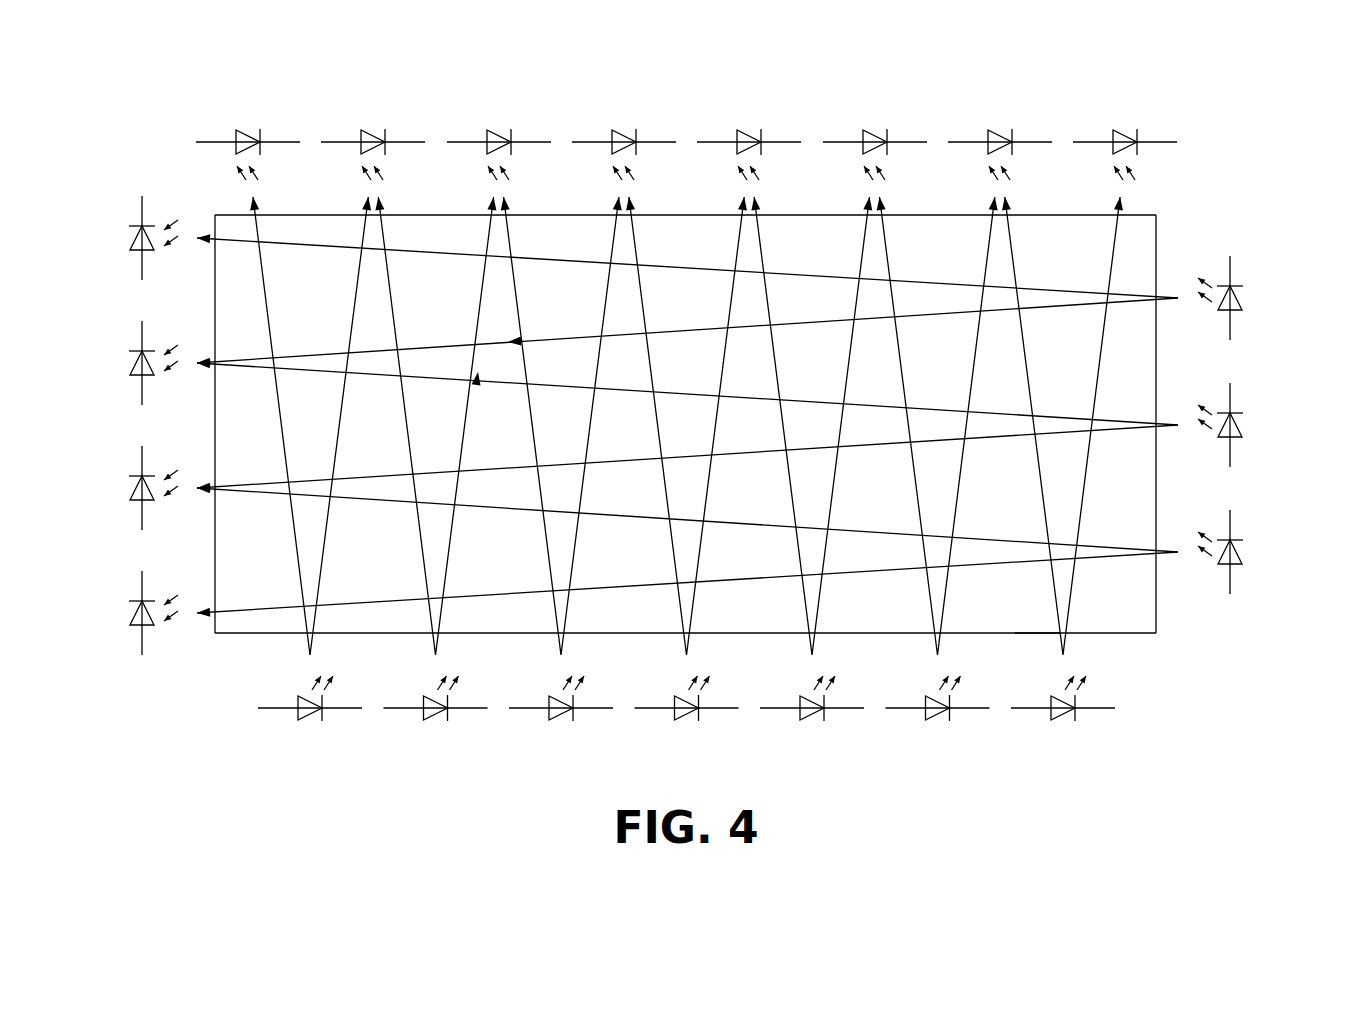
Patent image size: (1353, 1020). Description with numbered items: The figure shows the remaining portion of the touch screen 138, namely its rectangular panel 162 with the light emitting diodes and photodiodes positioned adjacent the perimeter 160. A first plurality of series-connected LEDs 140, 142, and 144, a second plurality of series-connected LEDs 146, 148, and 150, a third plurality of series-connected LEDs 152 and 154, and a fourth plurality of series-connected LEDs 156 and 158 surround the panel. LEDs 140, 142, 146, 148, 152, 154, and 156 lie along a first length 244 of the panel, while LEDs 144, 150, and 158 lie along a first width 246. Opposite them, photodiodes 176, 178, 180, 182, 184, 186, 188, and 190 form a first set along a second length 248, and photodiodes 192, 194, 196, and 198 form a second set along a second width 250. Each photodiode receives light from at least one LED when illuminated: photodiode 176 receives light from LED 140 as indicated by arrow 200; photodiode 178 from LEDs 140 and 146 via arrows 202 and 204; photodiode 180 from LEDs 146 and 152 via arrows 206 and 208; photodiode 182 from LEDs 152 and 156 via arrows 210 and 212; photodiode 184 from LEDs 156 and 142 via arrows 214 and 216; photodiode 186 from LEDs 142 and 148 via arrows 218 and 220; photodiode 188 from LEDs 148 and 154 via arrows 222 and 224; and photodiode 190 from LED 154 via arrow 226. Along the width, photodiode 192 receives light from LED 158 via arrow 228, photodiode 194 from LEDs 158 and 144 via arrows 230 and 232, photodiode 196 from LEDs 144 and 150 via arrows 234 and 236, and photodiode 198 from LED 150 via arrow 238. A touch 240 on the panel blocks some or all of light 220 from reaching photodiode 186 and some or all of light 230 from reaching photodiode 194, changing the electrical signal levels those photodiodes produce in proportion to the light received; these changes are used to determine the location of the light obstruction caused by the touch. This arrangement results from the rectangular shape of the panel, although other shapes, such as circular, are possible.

The touch screen 138 is at (1178, 92).
The light emitting diode 140 is at (1099, 710).
The light emitting diode 142 is at (597, 710).
The light emitting diode 144 is at (1232, 449).
The light emitting diode 146 is at (973, 710).
The light emitting diode 148 is at (471, 710).
The light emitting diode 150 is at (1232, 576).
The light emitting diode 152 is at (848, 710).
The light emitting diode 154 is at (346, 710).
The light emitting diode 156 is at (722, 710).
The light emitting diode 158 is at (1232, 322).
The perimeter 160 is at (1038, 636).
The panel 162 is at (691, 424).
The photodiode 176 is at (1089, 142).
The photodiode 178 is at (964, 142).
The photodiode 180 is at (839, 142).
The photodiode 182 is at (713, 142).
The photodiode 184 is at (588, 142).
The photodiode 186 is at (463, 142).
The photodiode 188 is at (337, 142).
The photodiode 190 is at (212, 142).
The photodiode 192 is at (142, 260).
The photodiode 194 is at (142, 385).
The photodiode 196 is at (142, 510).
The photodiode 198 is at (142, 635).
The arrow 200 is at (1068, 618).
The arrow 202 is at (1006, 232).
The arrow 204 is at (942, 618).
The arrow 206 is at (881, 232).
The arrow 208 is at (817, 618).
The arrow 210 is at (755, 232).
The arrow 212 is at (691, 618).
The arrow 214 is at (630, 232).
The arrow 216 is at (566, 618).
The arrow 218 is at (505, 232).
The arrow 220 is at (440, 618).
The arrow 222 is at (379, 232).
The arrow 224 is at (315, 618).
The arrow 226 is at (254, 232).
The arrow 228 is at (1139, 292).
The arrow 230 is at (1138, 305).
The arrow 232 is at (1132, 418).
The arrow 234 is at (1132, 432).
The arrow 236 is at (1132, 545).
The arrow 238 is at (1120, 558).
The touch 240 is at (460, 351).
The first length 244 is at (243, 635).
The first width 246 is at (1160, 612).
The second length 248 is at (217, 212).
The second width 250 is at (214, 318).